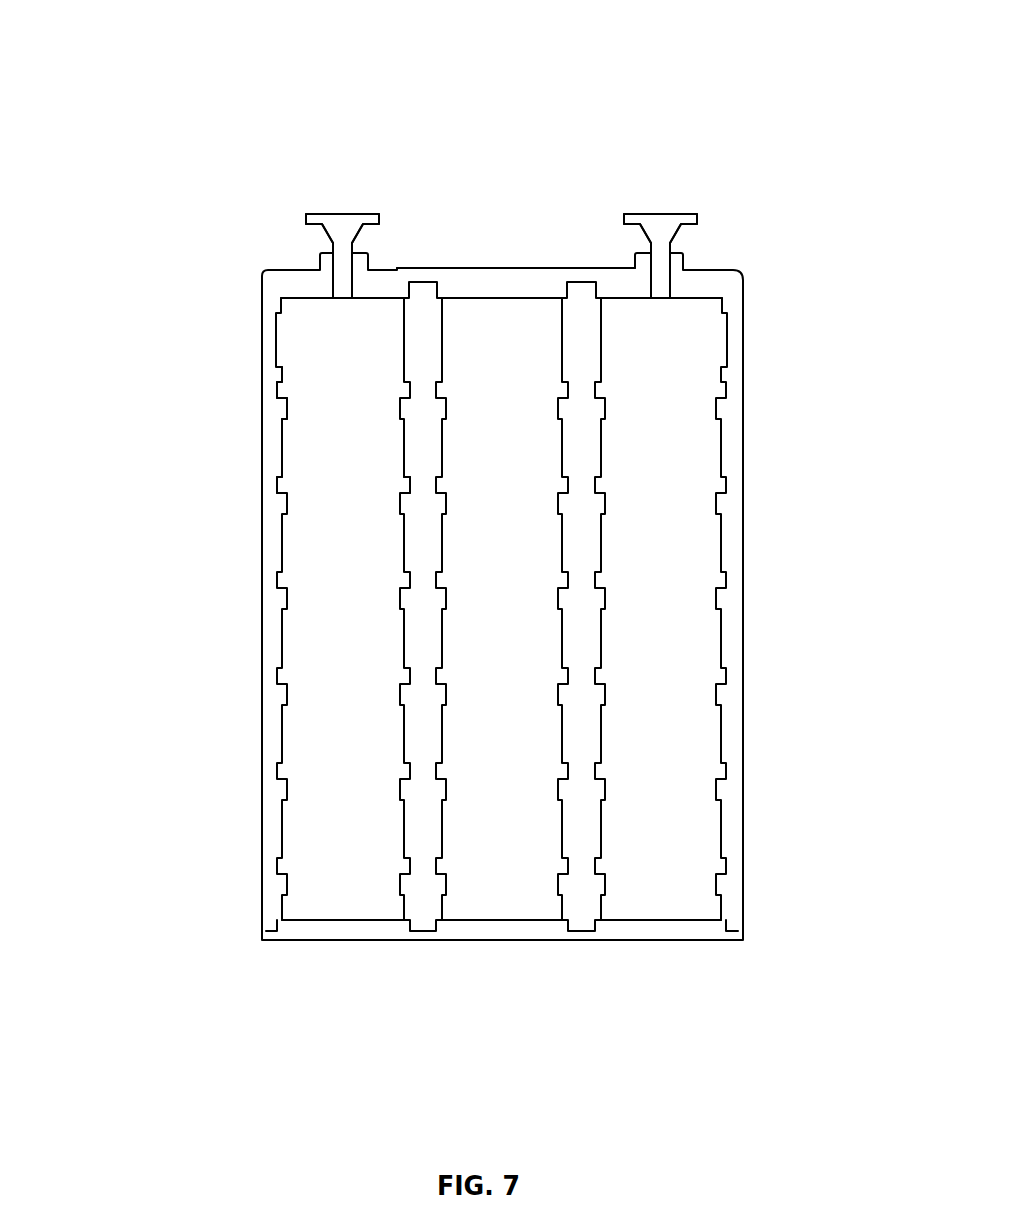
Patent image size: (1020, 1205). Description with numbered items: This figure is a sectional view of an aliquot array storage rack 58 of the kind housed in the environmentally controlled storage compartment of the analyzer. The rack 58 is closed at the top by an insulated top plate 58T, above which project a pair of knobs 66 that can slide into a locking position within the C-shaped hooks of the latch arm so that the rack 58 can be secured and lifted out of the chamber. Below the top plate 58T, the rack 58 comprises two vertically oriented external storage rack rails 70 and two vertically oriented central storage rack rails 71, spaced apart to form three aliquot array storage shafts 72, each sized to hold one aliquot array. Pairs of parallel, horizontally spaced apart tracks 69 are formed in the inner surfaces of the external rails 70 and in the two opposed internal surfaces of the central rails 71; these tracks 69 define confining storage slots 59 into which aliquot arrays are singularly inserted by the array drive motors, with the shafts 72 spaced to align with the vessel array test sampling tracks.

The aliquot array storage rack 58 is at (181, 185).
The insulated top plate 58T is at (409, 268).
The knob 66 is at (345, 214).
The track 69 is at (261, 374).
The external storage rack rail 70 is at (272, 735).
The central storage rack rail 71 is at (405, 636).
The aliquot array storage shaft 72 is at (706, 368).
The storage slot 59 is at (403, 487).